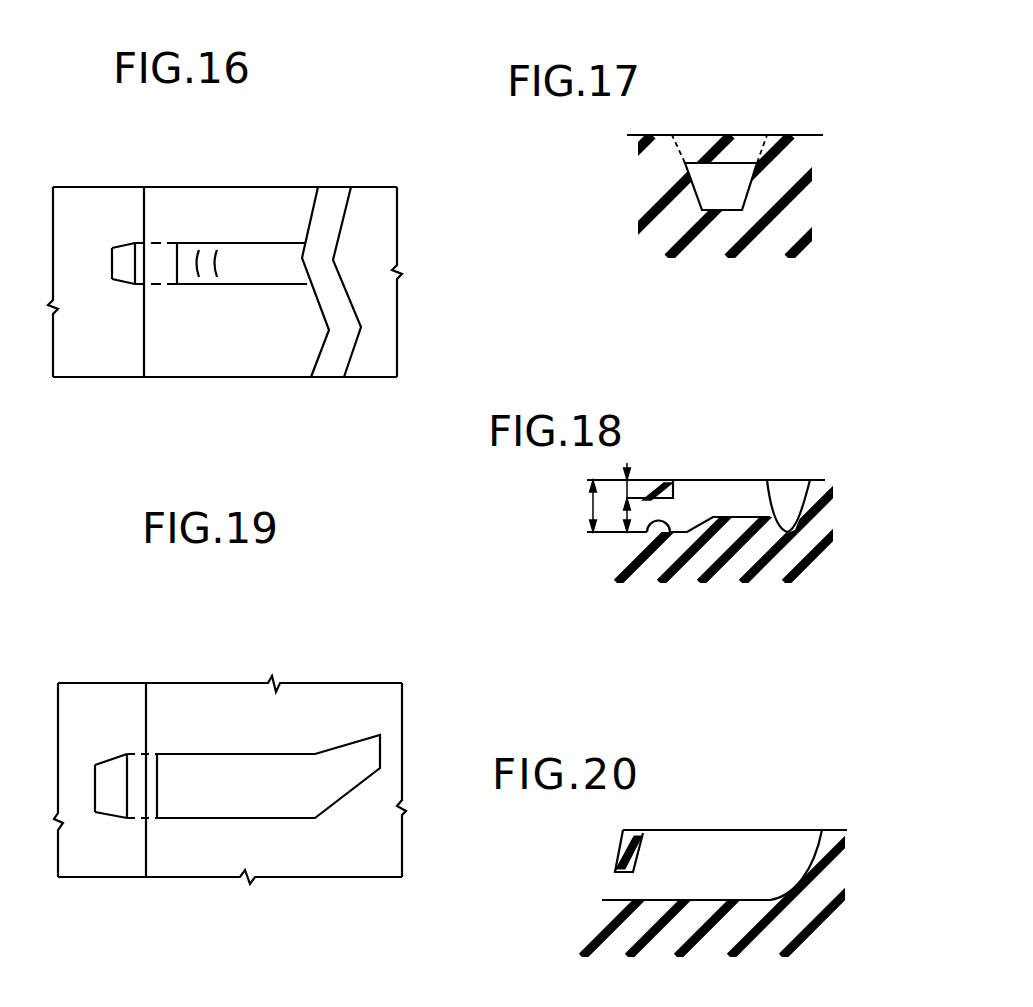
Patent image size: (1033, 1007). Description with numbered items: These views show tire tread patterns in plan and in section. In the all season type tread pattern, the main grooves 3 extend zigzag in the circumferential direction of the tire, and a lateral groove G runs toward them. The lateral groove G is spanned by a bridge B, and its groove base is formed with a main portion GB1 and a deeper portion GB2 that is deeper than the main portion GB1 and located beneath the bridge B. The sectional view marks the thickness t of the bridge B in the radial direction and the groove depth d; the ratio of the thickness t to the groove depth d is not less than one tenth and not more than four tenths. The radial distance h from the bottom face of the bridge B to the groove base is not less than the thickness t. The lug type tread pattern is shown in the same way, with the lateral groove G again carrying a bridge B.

In FIG. 16, the main groove 3 is at (330, 203).
In FIG. 16, the lateral groove G is at (240, 263).
In FIG. 19, the lateral groove G is at (222, 785).
In FIG. 20, the lateral groove G is at (710, 850).
In FIG. 17, the bridge B is at (693, 145).
In FIG. 18, the bridge B is at (660, 487).
In FIG. 19, the bridge B is at (145, 787).
In FIG. 20, the bridge B is at (542, 998).
In FIG. 18, the main portion of the groove base GB1 is at (735, 517).
In FIG. 18, the deeper portion of the groove base GB2 is at (670, 532).
In FIG. 18, the thickness of the bridge t is at (578, 628).
In FIG. 18, the groove depth d is at (585, 503).
In FIG. 18, the radial distance h is at (623, 522).